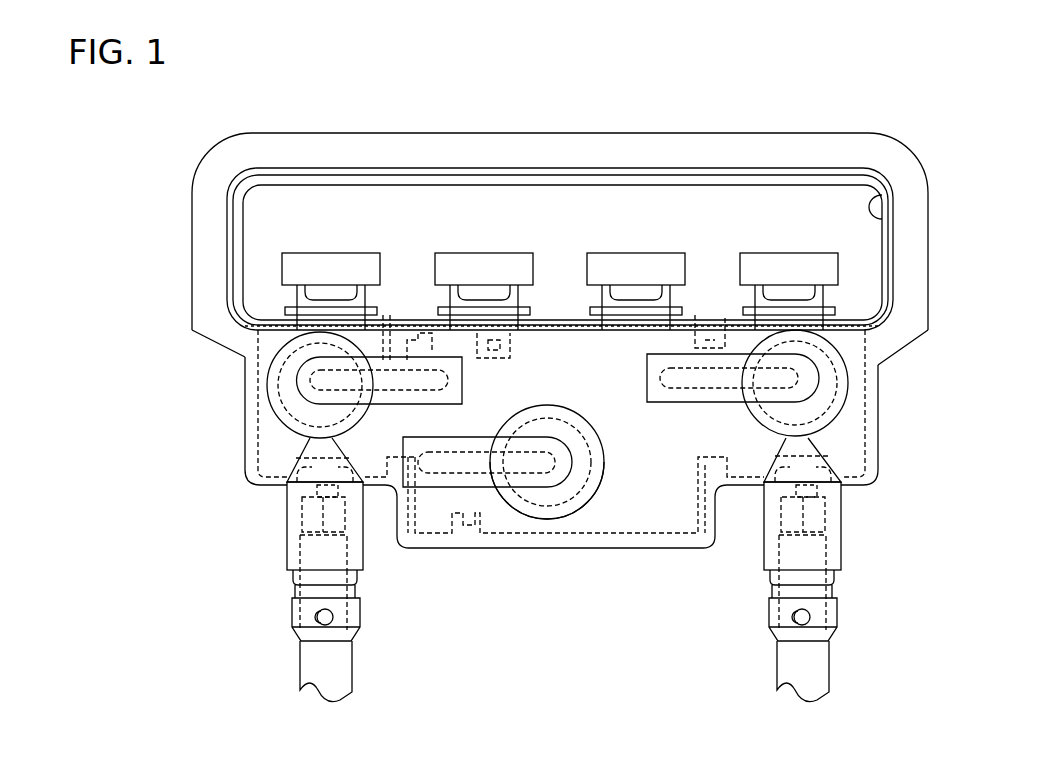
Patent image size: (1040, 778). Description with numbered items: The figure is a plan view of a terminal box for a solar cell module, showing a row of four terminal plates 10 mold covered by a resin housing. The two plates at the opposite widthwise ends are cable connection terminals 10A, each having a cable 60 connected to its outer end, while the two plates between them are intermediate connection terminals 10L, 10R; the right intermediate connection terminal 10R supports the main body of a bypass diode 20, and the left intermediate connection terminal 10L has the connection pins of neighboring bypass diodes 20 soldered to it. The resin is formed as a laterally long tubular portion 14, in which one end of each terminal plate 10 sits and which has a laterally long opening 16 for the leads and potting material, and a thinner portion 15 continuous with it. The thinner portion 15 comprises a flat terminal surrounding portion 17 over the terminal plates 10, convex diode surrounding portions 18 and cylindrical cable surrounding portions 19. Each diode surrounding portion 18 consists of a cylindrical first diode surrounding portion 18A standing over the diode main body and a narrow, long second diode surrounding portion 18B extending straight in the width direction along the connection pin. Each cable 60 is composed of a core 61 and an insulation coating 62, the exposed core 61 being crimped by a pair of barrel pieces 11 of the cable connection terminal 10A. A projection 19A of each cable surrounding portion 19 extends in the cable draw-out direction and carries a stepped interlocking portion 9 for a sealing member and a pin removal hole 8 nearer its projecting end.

The terminal plate 10 is at (332, 96).
The cable connection terminal 10A is at (328, 265).
The intermediate connection terminal (left) 10L is at (482, 265).
The intermediate connection terminal (right) 10R is at (638, 265).
The tubular portion 14 is at (888, 248).
The opening 16 is at (872, 197).
The thinner portion 15 is at (878, 432).
The terminal surrounding portion 17 is at (658, 523).
The diode surrounding portion 18 is at (262, 367).
The first diode surrounding portion 18A is at (532, 513).
The second diode surrounding portion 18B is at (448, 480).
The bypass diode 20 is at (280, 422).
The cable surrounding portion 19 is at (292, 472).
The projection 19A is at (293, 533).
The core 61 is at (817, 490).
The barrel piece 11 is at (813, 515).
The insulation coating 62 is at (808, 560).
The interlocking portion 9 is at (297, 590).
The pin removal hole 8 is at (318, 615).
The cable 60 is at (315, 672).